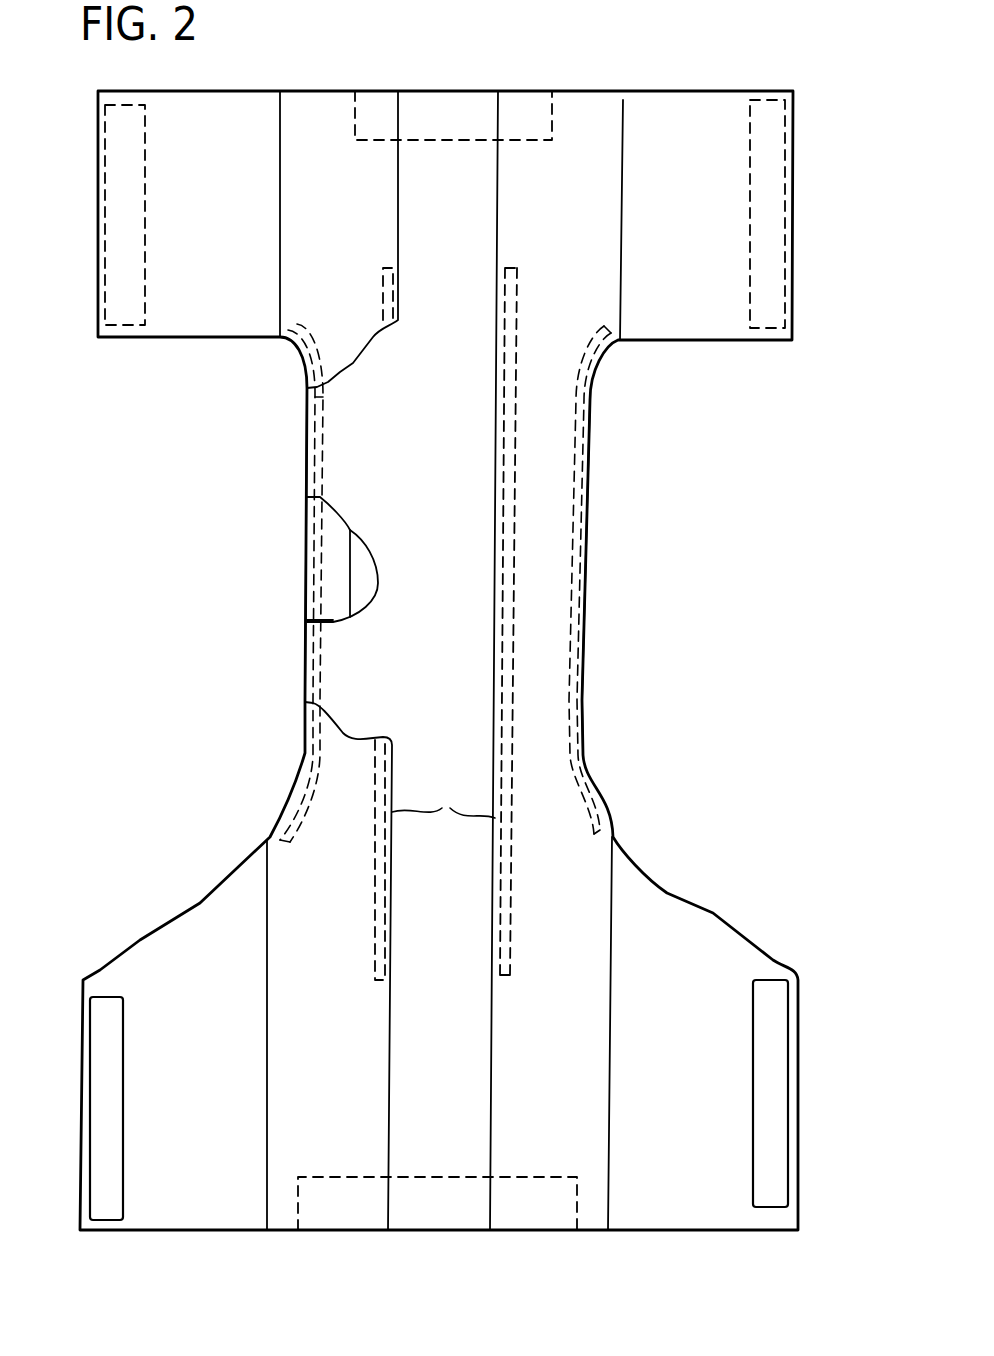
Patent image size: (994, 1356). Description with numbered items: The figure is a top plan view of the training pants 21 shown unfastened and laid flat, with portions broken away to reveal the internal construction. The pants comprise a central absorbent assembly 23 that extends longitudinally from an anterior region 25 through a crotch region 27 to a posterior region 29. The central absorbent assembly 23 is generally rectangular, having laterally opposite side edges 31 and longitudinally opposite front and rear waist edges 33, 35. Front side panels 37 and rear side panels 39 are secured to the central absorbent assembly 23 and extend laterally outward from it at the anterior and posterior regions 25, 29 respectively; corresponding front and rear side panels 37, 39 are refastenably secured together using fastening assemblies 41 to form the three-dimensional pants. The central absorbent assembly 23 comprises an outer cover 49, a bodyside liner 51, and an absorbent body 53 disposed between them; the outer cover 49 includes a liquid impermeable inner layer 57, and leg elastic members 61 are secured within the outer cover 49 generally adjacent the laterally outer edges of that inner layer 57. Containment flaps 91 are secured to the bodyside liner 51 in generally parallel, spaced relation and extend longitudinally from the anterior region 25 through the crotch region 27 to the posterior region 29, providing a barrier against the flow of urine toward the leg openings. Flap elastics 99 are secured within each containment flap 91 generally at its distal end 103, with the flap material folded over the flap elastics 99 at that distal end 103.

The training pants 21 is at (590, 65).
The central absorbent assembly 23 is at (425, 1118).
The anterior region 25 is at (320, 112).
The crotch region 27 is at (583, 647).
The posterior region 29 is at (585, 1150).
The side edges 31 is at (582, 710).
The front waist edge 33 is at (434, 90).
The rear waist edge 35 is at (442, 1233).
The front side panels 37 is at (197, 91).
The rear side panels 39 is at (177, 1233).
The fastening assemblies 41 is at (105, 170).
The outer cover 49 is at (338, 565).
The bodyside liner 51 is at (467, 1022).
The absorbent body 53 is at (350, 540).
The inner layer 57 is at (333, 602).
The leg elastic members 61 is at (310, 433).
The containment flaps 91 is at (323, 280).
The flap elastics 99 is at (517, 432).
The distal end 103 is at (443, 797).